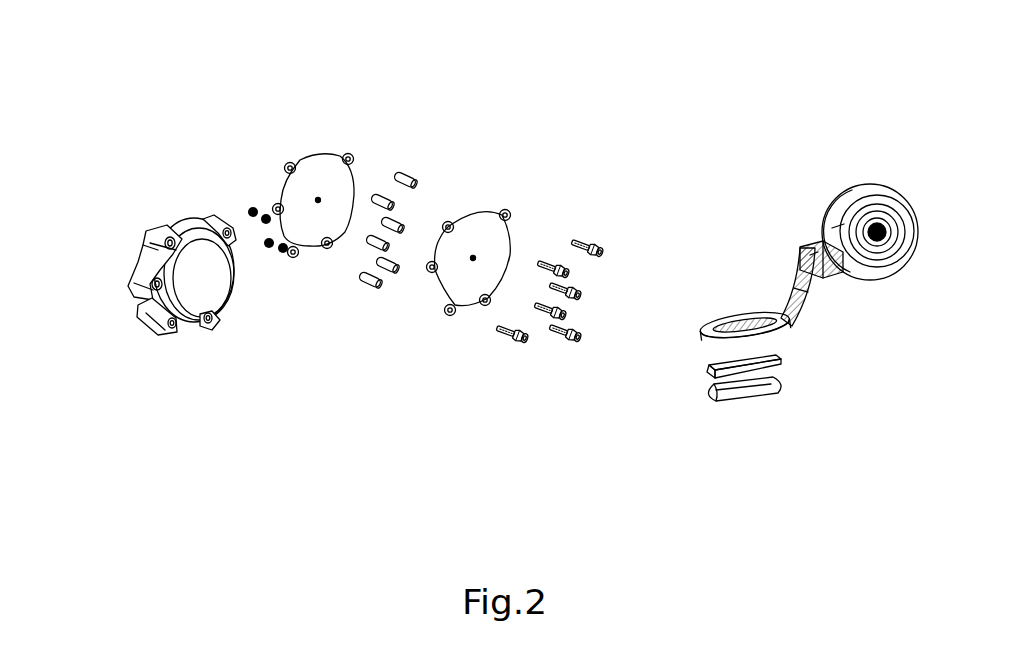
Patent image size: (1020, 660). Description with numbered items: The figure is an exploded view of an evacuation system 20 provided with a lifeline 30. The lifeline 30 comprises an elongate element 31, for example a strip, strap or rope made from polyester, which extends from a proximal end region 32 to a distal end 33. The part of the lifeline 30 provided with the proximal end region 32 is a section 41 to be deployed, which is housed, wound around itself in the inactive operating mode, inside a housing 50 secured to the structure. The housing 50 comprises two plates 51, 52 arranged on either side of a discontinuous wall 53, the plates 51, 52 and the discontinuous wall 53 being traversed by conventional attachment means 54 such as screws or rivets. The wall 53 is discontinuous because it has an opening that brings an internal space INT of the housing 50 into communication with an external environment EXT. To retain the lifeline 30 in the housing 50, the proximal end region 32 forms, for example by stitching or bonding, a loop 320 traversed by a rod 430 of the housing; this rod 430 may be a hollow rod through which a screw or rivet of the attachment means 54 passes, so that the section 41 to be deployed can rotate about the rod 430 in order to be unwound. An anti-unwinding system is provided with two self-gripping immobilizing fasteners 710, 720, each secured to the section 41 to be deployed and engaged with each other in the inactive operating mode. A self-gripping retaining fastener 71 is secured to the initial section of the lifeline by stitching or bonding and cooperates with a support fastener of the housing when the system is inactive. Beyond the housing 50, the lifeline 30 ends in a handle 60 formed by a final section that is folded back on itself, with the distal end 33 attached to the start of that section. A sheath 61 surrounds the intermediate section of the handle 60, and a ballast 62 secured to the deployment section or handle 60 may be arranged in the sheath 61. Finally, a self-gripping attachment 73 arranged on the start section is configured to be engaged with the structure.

The evacuation system 20 is at (317, 434).
The lifeline 30 is at (800, 258).
The elongate element 31 is at (860, 184).
The proximal end region 32 is at (893, 232).
The distal end 33 is at (750, 315).
The section to be deployed 41 is at (926, 249).
The housing 50 is at (349, 116).
The plate 51 is at (312, 153).
The plate 52 is at (497, 238).
The discontinuous wall 53 is at (190, 322).
The attachment means 54 is at (519, 354).
The handle 60 is at (676, 342).
The sheath 61 is at (784, 388).
The ballast 62 is at (707, 370).
The retaining fastener 71 is at (818, 243).
The self-gripping attachment 73 is at (748, 312).
The loop 320 is at (888, 233).
The rod 430 is at (402, 220).
The immobilizing fastener 710 is at (829, 247).
The immobilizing fastener 720 is at (829, 247).
The external environment EXT is at (89, 355).
The internal space INT is at (188, 268).